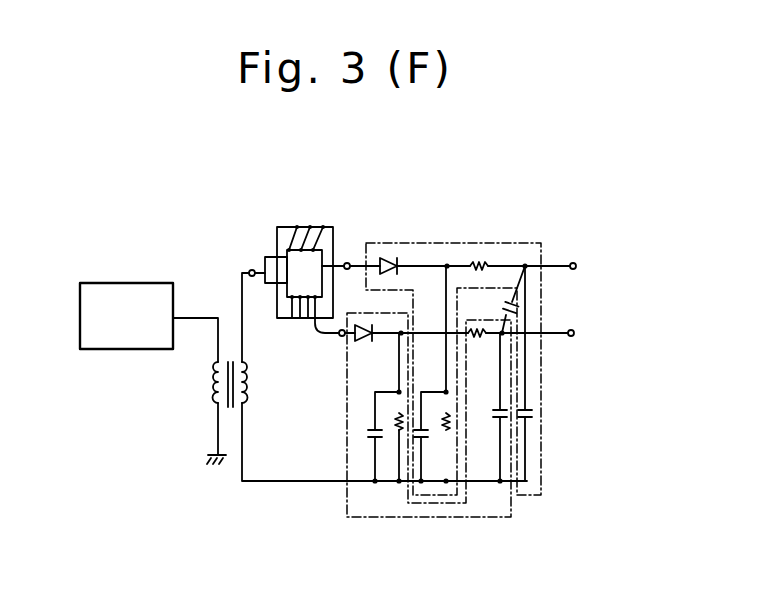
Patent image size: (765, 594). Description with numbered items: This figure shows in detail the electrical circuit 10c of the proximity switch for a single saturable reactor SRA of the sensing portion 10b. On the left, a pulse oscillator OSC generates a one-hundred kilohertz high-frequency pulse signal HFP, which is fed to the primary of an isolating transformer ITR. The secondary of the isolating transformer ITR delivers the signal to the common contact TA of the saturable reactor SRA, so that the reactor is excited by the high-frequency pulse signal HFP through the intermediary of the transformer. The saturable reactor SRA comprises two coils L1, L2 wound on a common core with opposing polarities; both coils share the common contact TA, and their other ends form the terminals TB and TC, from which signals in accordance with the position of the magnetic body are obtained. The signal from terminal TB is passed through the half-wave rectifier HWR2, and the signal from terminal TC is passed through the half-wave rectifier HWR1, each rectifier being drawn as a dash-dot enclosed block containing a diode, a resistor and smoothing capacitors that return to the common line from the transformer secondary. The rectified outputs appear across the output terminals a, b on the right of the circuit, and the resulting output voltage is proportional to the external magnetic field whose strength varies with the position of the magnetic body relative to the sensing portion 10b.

The pulse oscillator OSC is at (122, 343).
The high-frequency pulse signal HFP is at (195, 328).
The isolating transformer ITR is at (214, 404).
The sensing portion 10b is at (314, 278).
The saturable reactor SRA is at (282, 227).
The coil L1 is at (310, 226).
The coil L2 is at (292, 322).
The common contact TA is at (250, 265).
The terminal TB is at (339, 254).
The terminal TC is at (330, 343).
The electric circuit 10c is at (397, 386).
The half-wave rectifier HWR1 is at (387, 512).
The half-wave rectifier HWR2 is at (445, 246).
The terminal a is at (582, 267).
The terminal b is at (581, 334).